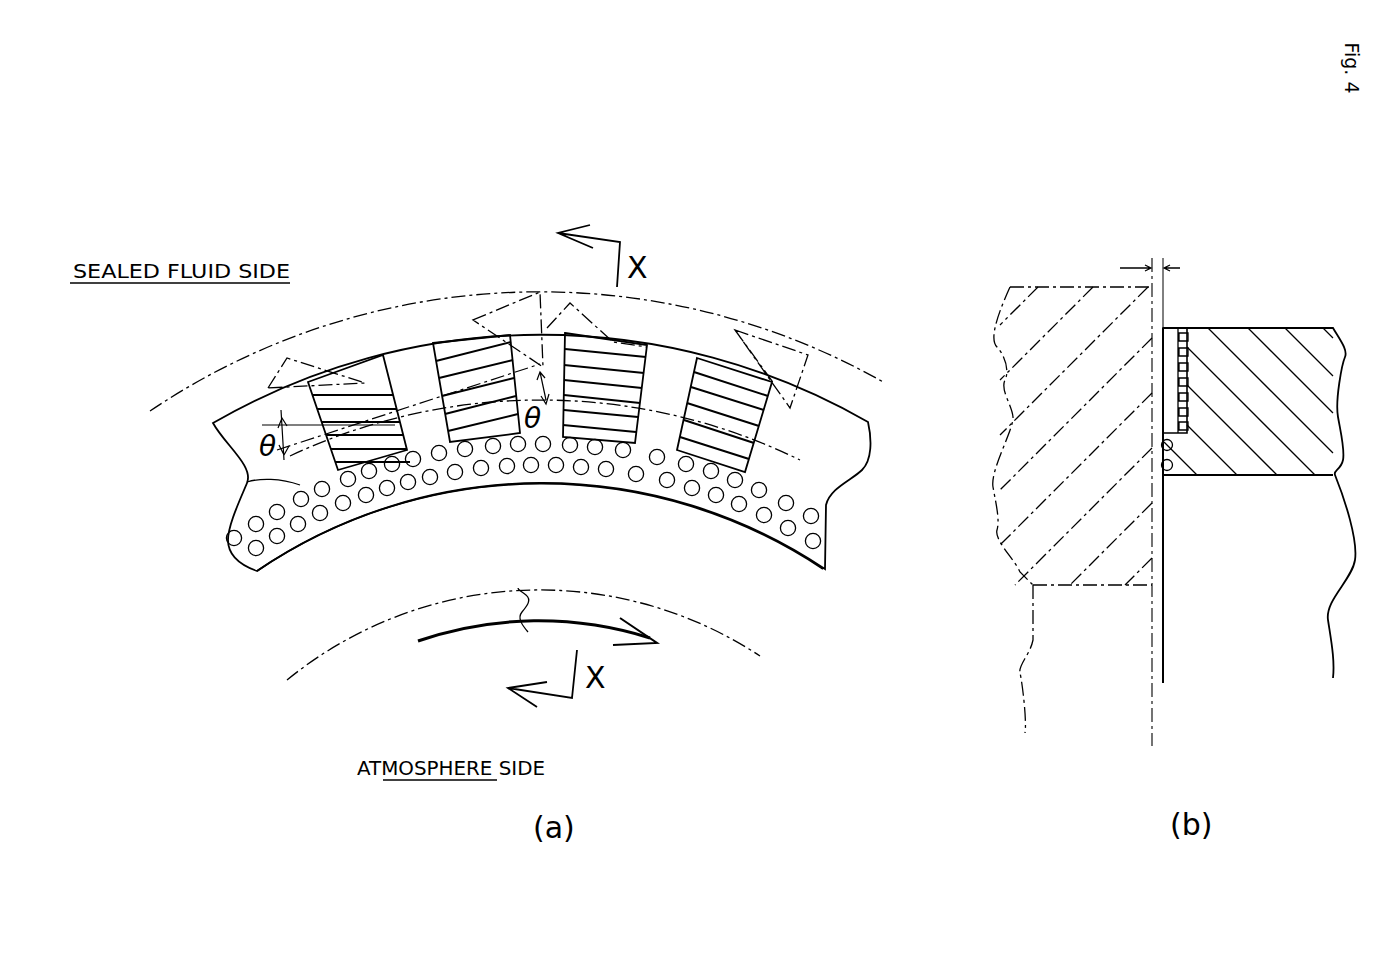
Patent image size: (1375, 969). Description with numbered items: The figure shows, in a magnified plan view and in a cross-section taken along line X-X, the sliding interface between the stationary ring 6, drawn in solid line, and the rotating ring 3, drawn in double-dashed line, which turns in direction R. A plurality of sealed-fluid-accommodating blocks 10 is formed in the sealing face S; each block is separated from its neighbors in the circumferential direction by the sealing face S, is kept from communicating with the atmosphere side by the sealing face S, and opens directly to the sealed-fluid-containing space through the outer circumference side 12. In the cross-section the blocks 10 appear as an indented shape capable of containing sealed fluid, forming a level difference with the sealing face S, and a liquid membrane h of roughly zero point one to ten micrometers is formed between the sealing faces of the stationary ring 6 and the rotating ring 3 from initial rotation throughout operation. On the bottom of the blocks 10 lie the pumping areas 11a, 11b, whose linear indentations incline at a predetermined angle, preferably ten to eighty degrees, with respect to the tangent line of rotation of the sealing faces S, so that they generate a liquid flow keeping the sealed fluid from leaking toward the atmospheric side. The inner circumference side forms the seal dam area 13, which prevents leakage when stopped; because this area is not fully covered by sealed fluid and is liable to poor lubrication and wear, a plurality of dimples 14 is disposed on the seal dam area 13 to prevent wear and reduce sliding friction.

The rotating ring 3 is at (383, 615).
The stationary ring 6 is at (237, 408).
The sealed-fluid-accommodating blocks 10 is at (655, 498).
The first inclined dynamic pressure groove 11a is at (308, 382).
The second inclined dynamic pressure groove 11b is at (457, 370).
The outer circumference side 12 is at (433, 342).
The seal dam area 13 is at (300, 545).
The dimples 14 is at (397, 490).
The sealing face S is at (247, 482).
The liquid membrane h is at (1150, 251).